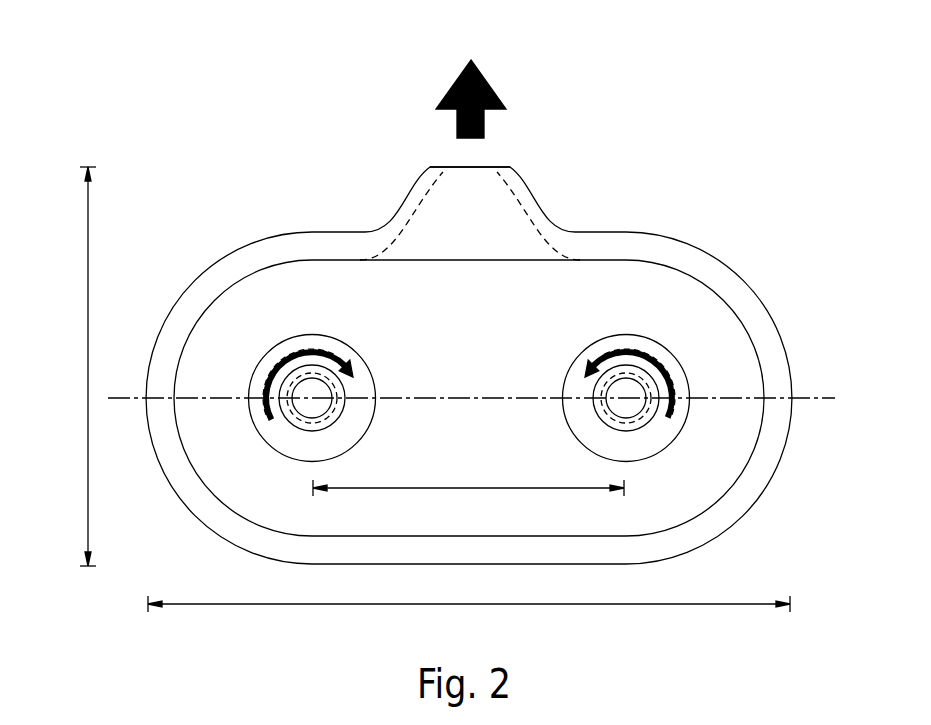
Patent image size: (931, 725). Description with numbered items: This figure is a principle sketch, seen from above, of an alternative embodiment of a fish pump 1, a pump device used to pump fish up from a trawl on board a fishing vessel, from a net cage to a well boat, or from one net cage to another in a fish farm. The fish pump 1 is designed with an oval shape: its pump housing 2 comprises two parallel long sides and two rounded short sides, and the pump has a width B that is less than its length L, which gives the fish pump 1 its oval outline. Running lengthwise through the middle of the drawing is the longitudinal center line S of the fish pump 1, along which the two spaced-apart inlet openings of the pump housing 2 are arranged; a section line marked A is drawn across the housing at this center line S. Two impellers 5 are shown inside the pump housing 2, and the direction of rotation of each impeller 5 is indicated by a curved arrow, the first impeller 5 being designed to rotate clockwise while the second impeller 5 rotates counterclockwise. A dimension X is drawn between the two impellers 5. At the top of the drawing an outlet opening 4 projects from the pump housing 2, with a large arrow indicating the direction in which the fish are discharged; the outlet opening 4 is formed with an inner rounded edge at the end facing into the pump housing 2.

The fish pump 1 is at (740, 236).
The pump housing 2 is at (692, 537).
The outlet opening 4 is at (476, 174).
The impeller 5 is at (350, 335).
The section line A- A is at (114, 390).
The longitudinal center line S is at (136, 414).
The width B is at (71, 366).
The length L is at (469, 623).
The screw spacing X is at (468, 478).